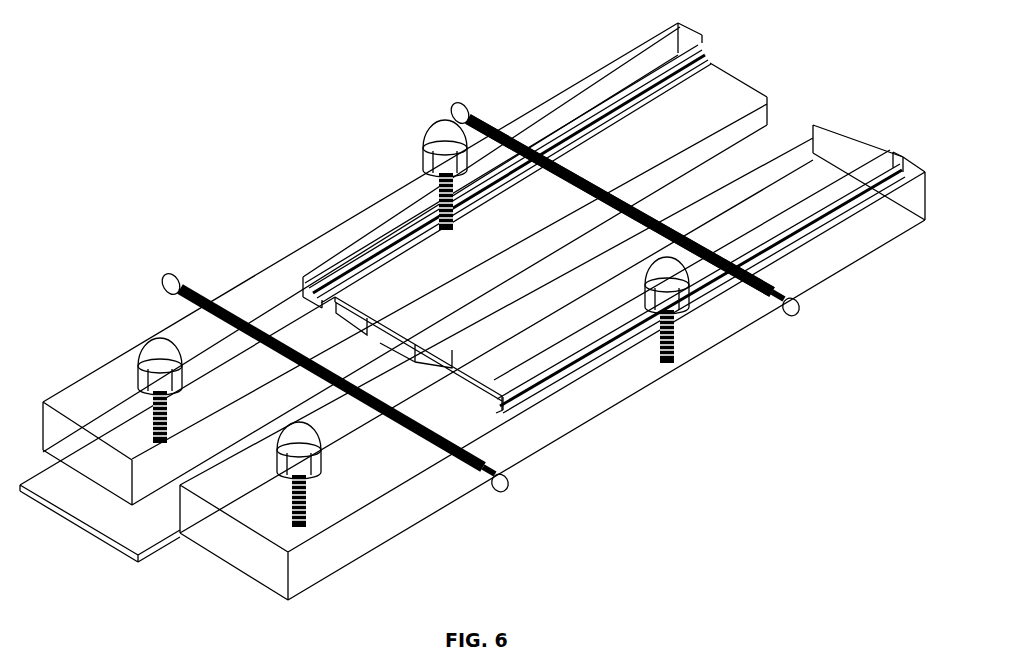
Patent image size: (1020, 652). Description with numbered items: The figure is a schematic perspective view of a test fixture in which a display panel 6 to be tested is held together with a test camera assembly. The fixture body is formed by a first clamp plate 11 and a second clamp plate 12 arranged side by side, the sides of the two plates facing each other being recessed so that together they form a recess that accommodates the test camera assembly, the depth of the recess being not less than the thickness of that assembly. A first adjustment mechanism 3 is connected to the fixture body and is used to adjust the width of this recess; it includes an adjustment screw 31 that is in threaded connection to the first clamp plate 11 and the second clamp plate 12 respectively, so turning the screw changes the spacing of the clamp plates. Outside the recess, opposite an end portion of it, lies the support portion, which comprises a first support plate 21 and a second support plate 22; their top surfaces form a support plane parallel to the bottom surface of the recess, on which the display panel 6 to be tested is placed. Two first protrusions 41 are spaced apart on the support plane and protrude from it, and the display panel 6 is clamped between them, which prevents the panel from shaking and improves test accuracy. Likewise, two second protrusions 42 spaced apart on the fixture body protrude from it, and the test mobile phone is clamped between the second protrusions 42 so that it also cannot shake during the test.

The first adjustment mechanism 3 is at (169, 275).
The adjustment screw 31 is at (620, 205).
The display panel to be tested 6 is at (150, 540).
The first clamp plate 11 is at (748, 122).
The second clamp plate 12 is at (798, 147).
The first support plate 21 is at (88, 392).
The second support plate 22 is at (420, 505).
The first protrusions 41 is at (322, 466).
The second protrusions 42 is at (692, 302).